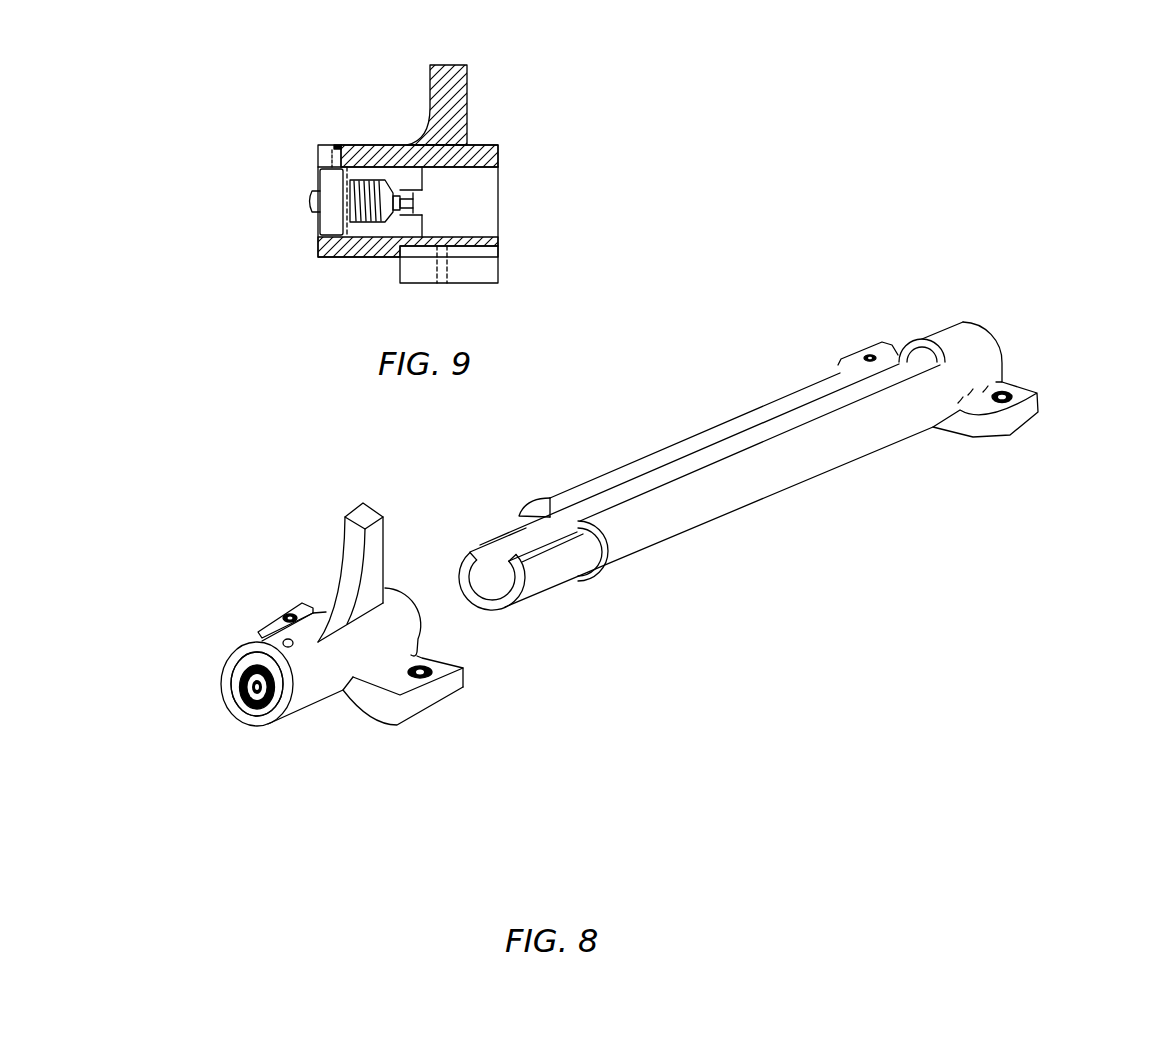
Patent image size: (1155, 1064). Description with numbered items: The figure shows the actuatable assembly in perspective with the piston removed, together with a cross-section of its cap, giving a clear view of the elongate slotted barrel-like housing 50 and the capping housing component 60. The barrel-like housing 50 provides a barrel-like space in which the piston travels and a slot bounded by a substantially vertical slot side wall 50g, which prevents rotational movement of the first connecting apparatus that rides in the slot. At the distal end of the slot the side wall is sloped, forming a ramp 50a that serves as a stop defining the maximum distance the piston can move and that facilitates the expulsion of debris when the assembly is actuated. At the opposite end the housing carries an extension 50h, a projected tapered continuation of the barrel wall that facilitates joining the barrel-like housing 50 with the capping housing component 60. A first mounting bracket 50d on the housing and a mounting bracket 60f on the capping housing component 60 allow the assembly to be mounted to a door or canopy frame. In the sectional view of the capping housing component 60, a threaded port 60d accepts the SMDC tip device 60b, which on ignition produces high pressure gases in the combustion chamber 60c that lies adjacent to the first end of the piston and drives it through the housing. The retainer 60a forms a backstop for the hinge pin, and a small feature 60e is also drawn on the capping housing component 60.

In FIG. 8, the elongate slotted barrel-like housing 50 is at (755, 490).
In FIG. 8, the ramp 50a is at (922, 338).
In FIG. 8, the first mounting bracket 50d is at (883, 343).
In FIG. 8, the slot side wall 50g is at (665, 455).
In FIG. 8, the extension 50h is at (558, 558).
In FIG. 9, the capping housing component 60 is at (487, 203).
In FIG. 8, the capping housing component 60 is at (382, 650).
In FIG. 9, the retainer 60a is at (452, 92).
In FIG. 8, the retainer 60a is at (345, 565).
In FIG. 9, the SMDC tip device 60b is at (348, 200).
In FIG. 8, the SMDC tip device 60b is at (245, 675).
In FIG. 9, the combustion chamber 60c is at (427, 205).
In FIG. 9, the threaded port 60d is at (360, 170).
In FIG. 8, the threaded port 60d is at (243, 707).
In FIG. 9, the small hole 60e is at (336, 148).
In FIG. 8, the small hole 60e is at (288, 647).
In FIG. 9, the mounting bracket 60f is at (413, 263).
In FIG. 8, the mounting bracket 60f is at (275, 615).